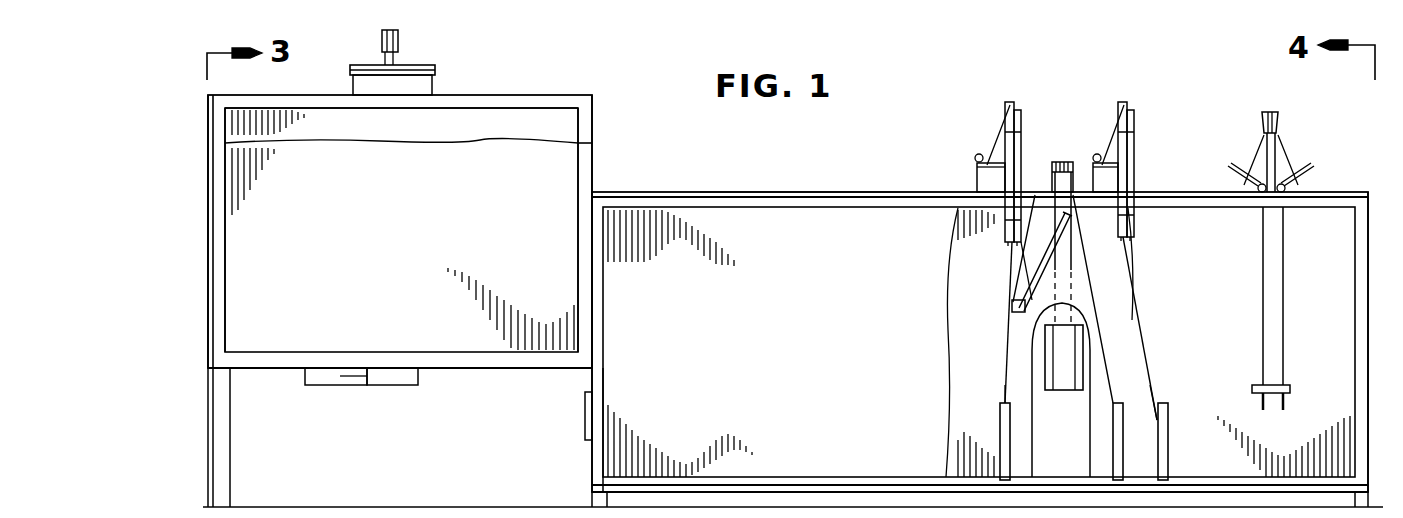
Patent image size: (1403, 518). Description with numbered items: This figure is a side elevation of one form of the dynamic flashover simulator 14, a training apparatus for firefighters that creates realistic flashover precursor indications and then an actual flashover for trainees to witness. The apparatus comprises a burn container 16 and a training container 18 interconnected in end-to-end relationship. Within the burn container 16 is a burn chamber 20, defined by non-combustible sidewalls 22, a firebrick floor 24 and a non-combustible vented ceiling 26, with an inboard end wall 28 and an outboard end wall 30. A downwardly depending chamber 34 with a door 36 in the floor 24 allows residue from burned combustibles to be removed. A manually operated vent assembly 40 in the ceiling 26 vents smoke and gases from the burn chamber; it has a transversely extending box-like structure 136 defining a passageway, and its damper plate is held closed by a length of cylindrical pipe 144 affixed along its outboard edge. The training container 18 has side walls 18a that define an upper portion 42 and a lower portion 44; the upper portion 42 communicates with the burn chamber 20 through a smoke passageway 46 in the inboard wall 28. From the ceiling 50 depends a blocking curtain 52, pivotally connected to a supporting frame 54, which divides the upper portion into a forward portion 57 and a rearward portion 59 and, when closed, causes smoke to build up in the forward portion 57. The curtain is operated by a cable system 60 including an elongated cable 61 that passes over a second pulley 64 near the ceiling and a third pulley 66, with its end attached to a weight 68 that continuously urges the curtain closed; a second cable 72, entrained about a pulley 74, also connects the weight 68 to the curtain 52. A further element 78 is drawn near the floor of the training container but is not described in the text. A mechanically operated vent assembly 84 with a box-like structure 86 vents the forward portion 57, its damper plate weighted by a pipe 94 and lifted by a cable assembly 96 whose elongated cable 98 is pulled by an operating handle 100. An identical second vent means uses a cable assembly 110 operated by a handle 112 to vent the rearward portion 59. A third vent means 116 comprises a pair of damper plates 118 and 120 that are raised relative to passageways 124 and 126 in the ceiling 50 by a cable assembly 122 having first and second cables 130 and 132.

The dynamic flashover simulator 14 is at (829, 168).
The burn container 16 is at (514, 77).
The training container 18 is at (722, 190).
The side walls 18a is at (979, 343).
The burn chamber 20 is at (548, 280).
The non-combustible sidewalls 22 is at (401, 230).
The firebrick floor 24 is at (490, 370).
The vented ceiling 26 is at (313, 95).
The inboard end wall 28 is at (598, 161).
The outboard end wall 30 is at (220, 203).
The downwardly depending chamber 34 is at (383, 382).
The door 36 is at (398, 382).
The manually operated vent assembly 40 is at (416, 63).
The upper portion 42 is at (962, 230).
The lower portion 44 is at (990, 456).
The smoke passageway 46 is at (590, 335).
The ceiling 50 is at (893, 199).
The blocking curtain 52 is at (1020, 300).
The supporting frame 54 is at (1031, 256).
The forward portion 57 is at (777, 223).
The rearward portion 59 is at (1177, 218).
The operating cable system 60 is at (1070, 298).
The elongated cable 61 is at (1055, 258).
The second pulley 64 is at (1059, 405).
The third pulley 66 is at (1055, 165).
The weight 68 is at (1046, 358).
The second cable 72 is at (1070, 275).
The pulley 74 is at (1064, 158).
The stop 78 is at (1112, 453).
The vent assembly 84 is at (992, 128).
The box-like structure 86 is at (985, 165).
The pipe weight 94 is at (975, 156).
The cable assembly 96 is at (1001, 390).
The elongated cable 98 is at (1007, 330).
The operating handle 100 is at (999, 432).
The cable assembly 110 is at (1153, 373).
The handle 112 is at (1170, 457).
The third vent means 116 is at (1282, 108).
The damper plate 118 is at (1243, 168).
The damper plate 120 is at (1305, 168).
The cable assembly 122 is at (1286, 332).
The passageway 124 is at (1243, 218).
The passageway 126 is at (1300, 218).
The first cable 130 is at (1258, 282).
The second cable 132 is at (1282, 352).
The box-like structure 136 is at (392, 85).
The pipe weight 144 is at (375, 66).